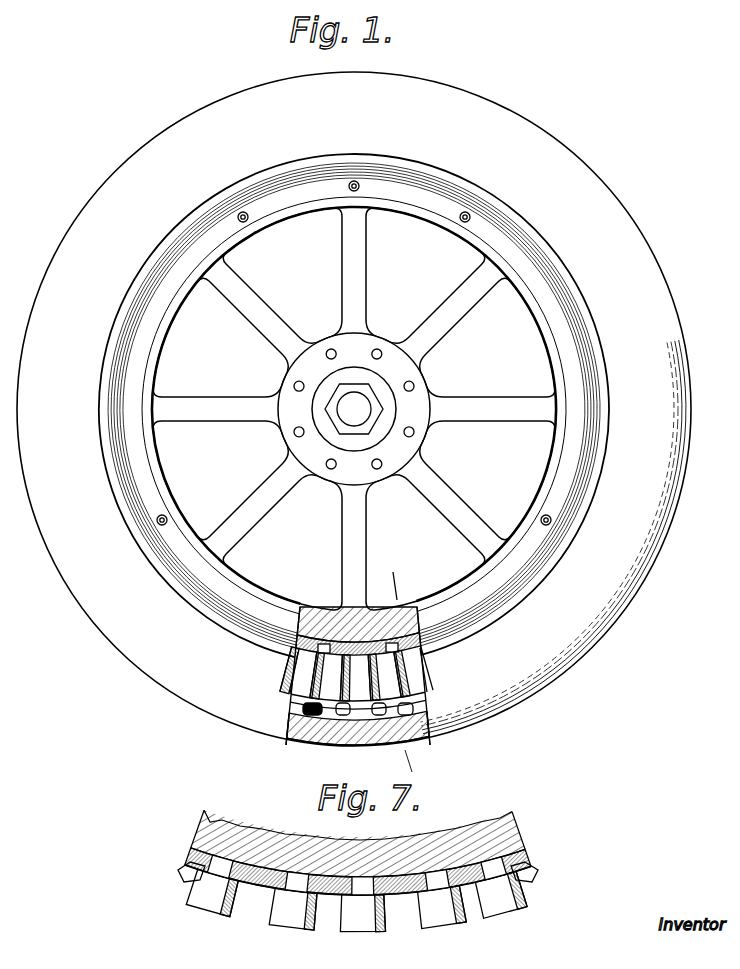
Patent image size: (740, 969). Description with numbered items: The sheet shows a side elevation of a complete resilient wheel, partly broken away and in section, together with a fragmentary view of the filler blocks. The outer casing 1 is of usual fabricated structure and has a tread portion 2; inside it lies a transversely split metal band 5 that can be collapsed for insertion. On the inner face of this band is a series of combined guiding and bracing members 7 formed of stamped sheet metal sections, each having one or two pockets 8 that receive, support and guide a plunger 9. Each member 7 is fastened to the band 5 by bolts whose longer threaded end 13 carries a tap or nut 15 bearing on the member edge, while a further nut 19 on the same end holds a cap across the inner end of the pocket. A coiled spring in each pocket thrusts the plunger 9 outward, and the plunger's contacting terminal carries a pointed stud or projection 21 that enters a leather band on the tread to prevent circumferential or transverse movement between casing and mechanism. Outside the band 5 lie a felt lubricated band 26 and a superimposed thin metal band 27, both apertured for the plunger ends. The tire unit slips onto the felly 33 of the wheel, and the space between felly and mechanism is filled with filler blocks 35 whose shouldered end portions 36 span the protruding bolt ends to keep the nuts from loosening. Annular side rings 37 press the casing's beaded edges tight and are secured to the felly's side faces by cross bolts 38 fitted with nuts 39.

In FIG. 1, the casing 1 is at (354, 409).
In FIG. 1, the tread portion 2 is at (406, 670).
In FIG. 1, the metal band 5 is at (430, 700).
In FIG. 1, the combined guiding and bracing member 7 is at (292, 688).
In FIG. 7, the combined guiding and bracing member 7 is at (212, 905).
In FIG. 1, the pocket 8 is at (310, 676).
In FIG. 7, the pocket 8 is at (270, 916).
In FIG. 1, the plunger 9 is at (300, 712).
In FIG. 1, the screw threaded end of bolt 13 is at (392, 646).
In FIG. 1, the tap or nut 15 is at (299, 660).
In FIG. 7, the tap or nut 15 is at (196, 876).
In FIG. 1, the nut 19 is at (326, 646).
In FIG. 7, the nut 19 is at (232, 866).
In FIG. 1, the stud or projection 21 is at (350, 740).
In FIG. 1, the lubricated band 26 is at (304, 742).
In FIG. 1, the thin metal band 27 is at (428, 734).
In FIG. 1, the felly 33 is at (325, 613).
In FIG. 7, the felly 33 is at (430, 846).
In FIG. 1, the filler block 35 is at (413, 646).
In FIG. 7, the filler block 35 is at (355, 880).
In FIG. 7, the shouldered or cut-away end portion 36 is at (376, 888).
In FIG. 1, the annular side ring 37 is at (467, 220).
In FIG. 1, the cross bolt 38 is at (360, 186).
In FIG. 1, the nut 39 is at (347, 186).